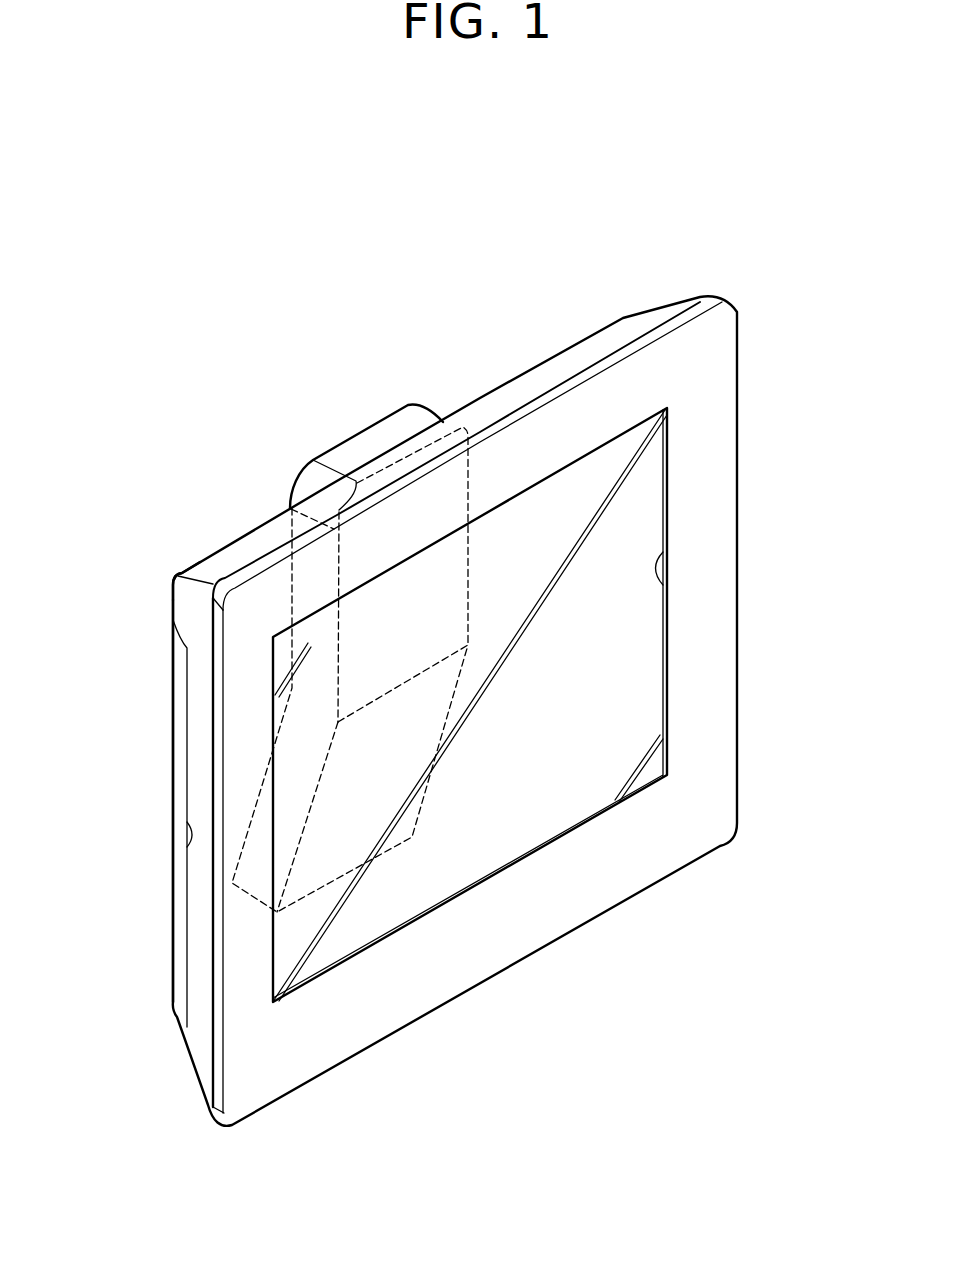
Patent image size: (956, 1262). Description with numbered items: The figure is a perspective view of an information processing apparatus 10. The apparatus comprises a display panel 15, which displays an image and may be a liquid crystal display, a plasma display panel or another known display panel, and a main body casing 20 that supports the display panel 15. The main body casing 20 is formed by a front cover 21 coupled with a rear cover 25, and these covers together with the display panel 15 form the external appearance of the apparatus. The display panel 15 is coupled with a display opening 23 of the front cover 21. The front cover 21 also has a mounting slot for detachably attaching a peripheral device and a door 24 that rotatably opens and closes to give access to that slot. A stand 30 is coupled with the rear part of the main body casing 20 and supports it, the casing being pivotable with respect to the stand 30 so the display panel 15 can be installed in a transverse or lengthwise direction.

The information processing apparatus 10 is at (207, 322).
The display panel 15 is at (635, 671).
The main body casing 20 is at (95, 595).
The front cover 21 is at (213, 712).
The display opening 23 is at (668, 586).
The door 24 is at (177, 820).
The rear cover 25 is at (180, 596).
The stand 30 is at (357, 437).